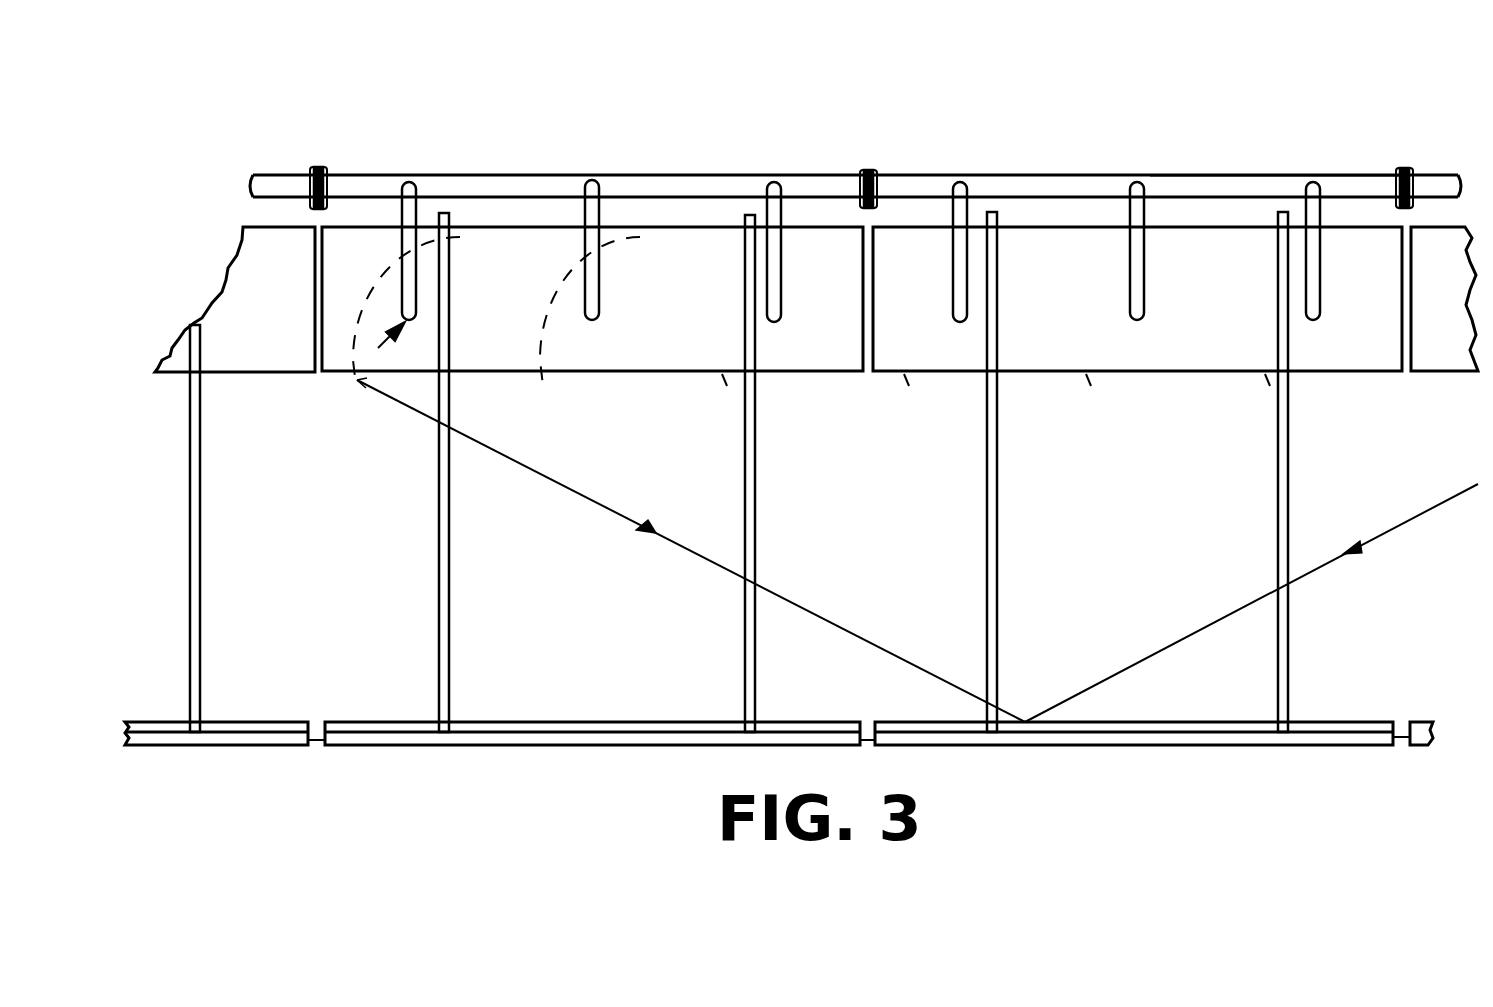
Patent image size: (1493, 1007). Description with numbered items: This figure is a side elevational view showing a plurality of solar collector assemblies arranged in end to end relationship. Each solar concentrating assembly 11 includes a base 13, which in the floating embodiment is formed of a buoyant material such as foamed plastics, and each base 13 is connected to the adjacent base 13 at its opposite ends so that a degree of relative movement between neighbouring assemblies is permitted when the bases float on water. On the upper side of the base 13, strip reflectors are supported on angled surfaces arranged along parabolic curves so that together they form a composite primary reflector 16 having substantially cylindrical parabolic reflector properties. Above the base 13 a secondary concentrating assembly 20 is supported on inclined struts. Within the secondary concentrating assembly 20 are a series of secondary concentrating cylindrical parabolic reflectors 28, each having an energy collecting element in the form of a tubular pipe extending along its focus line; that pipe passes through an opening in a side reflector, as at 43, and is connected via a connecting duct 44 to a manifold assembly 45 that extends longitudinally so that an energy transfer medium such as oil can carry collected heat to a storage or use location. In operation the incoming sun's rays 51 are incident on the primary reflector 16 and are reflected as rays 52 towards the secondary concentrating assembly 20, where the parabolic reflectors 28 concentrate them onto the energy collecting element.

The solar concentrating assembly 11 is at (637, 156).
The base 13 is at (632, 737).
The primary reflector 16 is at (643, 696).
The secondary concentrating assembly 20 is at (538, 162).
The secondary concentrating cylindrical parabolic reflector 28 is at (540, 345).
The opening in side reflector 43 is at (1140, 322).
The connecting duct 44 is at (1130, 218).
The manifold assembly 45 is at (1180, 173).
The incoming sun's rays 51 is at (1375, 538).
The reflected rays 52 is at (607, 512).